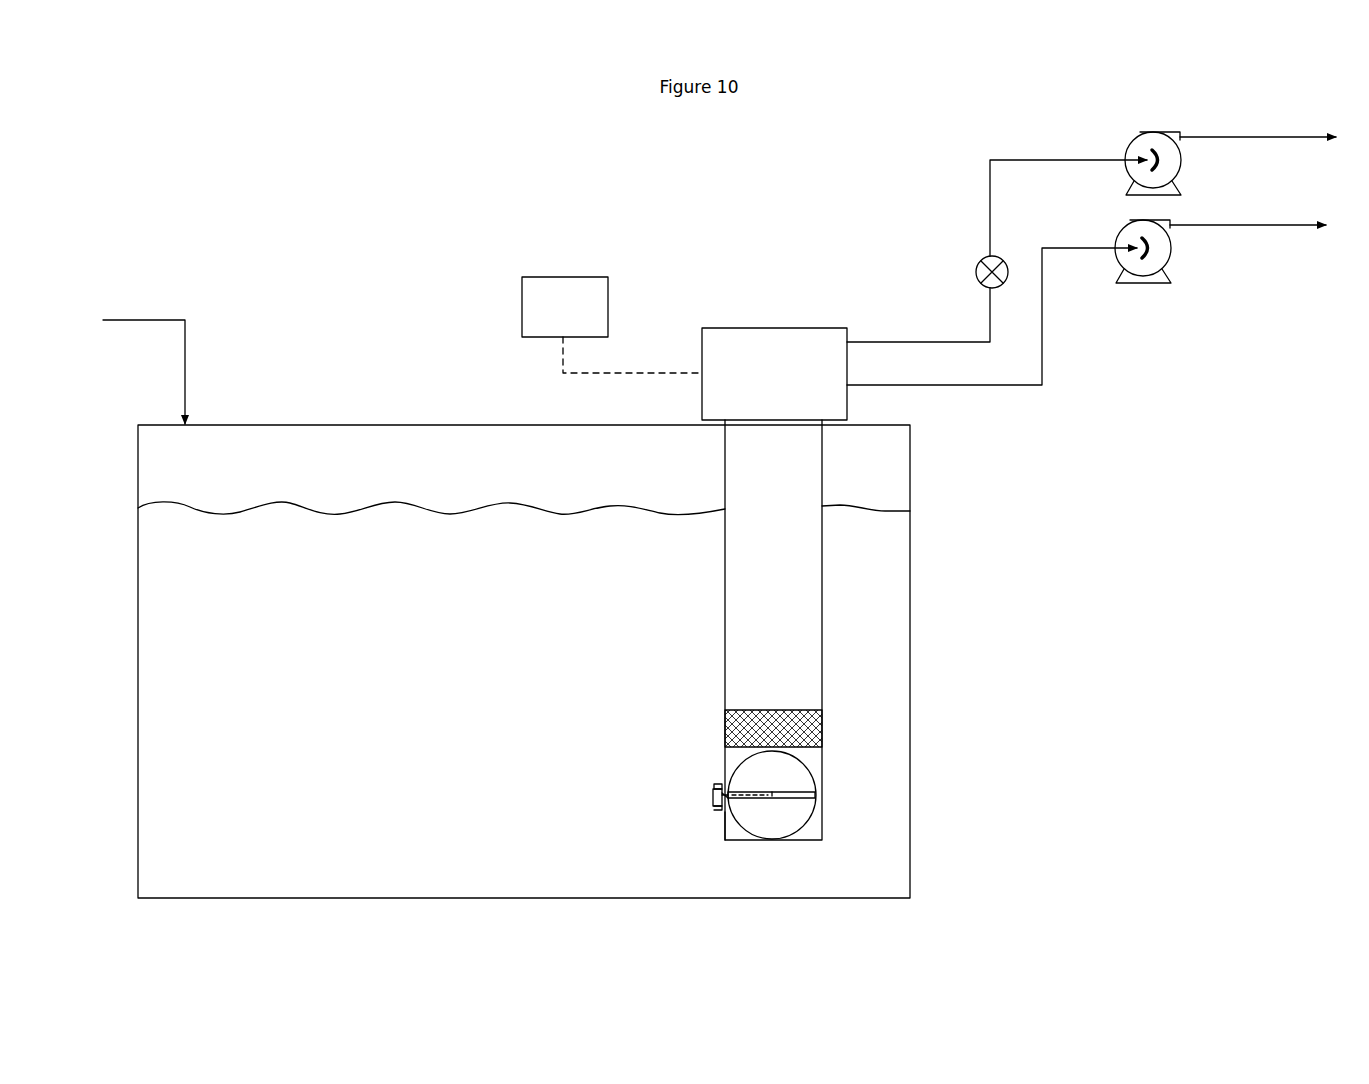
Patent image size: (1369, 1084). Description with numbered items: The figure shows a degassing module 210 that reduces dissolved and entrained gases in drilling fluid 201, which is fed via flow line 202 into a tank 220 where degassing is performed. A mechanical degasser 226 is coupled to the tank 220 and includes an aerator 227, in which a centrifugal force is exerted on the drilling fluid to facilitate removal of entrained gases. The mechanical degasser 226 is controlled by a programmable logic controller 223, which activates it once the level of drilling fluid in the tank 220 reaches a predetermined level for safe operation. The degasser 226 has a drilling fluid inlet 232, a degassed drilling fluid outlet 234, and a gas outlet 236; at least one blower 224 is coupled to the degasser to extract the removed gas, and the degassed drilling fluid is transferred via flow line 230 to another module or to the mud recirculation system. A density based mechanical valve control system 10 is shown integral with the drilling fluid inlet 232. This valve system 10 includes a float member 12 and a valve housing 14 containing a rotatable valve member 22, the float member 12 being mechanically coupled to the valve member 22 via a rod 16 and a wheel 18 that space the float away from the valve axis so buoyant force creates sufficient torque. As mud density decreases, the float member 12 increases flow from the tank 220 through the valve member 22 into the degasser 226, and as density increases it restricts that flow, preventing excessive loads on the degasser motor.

The density based mechanical valve control system 10 is at (733, 802).
The float member 12 is at (713, 797).
The valve housing 14 is at (725, 836).
The rod 16 is at (724, 803).
The wheel 18 is at (717, 784).
The valve member 22 is at (806, 794).
The drilling fluid 201 is at (524, 606).
The flow line 202 is at (144, 360).
The degassing module 210 is at (386, 251).
The tank 220 is at (485, 425).
The programmable logic controller 223 is at (555, 277).
The blower 224 is at (975, 260).
The mechanical degasser 226 is at (777, 323).
The aerator 227 is at (818, 715).
The flow line 230 is at (1225, 207).
The drilling fluid inlet 232 is at (800, 843).
The degassed drilling fluid outlet 234 is at (992, 316).
The gas outlet 236 is at (997, 251).